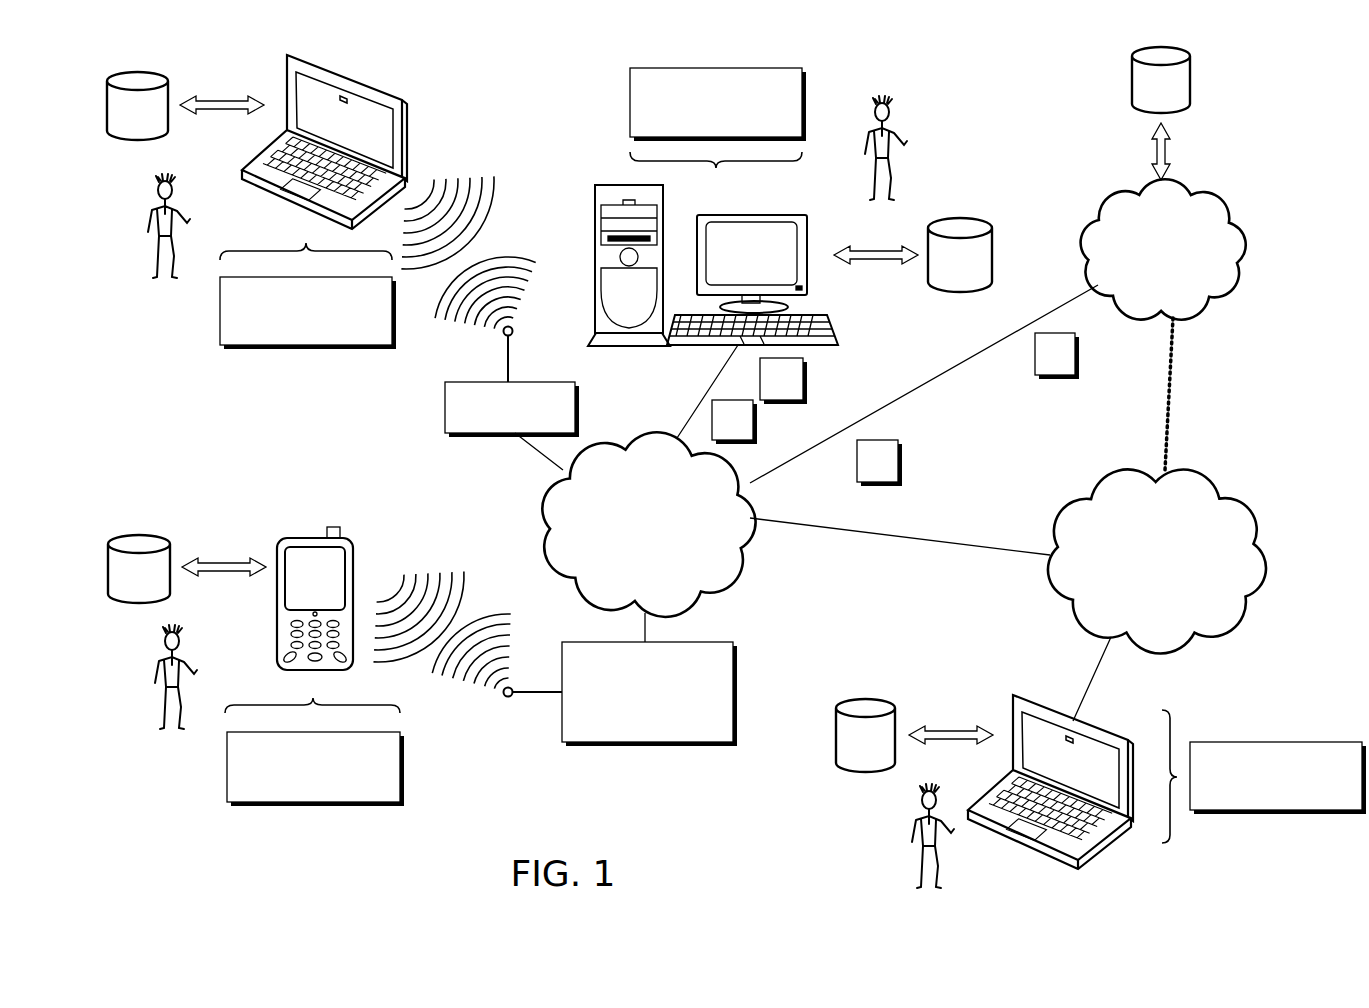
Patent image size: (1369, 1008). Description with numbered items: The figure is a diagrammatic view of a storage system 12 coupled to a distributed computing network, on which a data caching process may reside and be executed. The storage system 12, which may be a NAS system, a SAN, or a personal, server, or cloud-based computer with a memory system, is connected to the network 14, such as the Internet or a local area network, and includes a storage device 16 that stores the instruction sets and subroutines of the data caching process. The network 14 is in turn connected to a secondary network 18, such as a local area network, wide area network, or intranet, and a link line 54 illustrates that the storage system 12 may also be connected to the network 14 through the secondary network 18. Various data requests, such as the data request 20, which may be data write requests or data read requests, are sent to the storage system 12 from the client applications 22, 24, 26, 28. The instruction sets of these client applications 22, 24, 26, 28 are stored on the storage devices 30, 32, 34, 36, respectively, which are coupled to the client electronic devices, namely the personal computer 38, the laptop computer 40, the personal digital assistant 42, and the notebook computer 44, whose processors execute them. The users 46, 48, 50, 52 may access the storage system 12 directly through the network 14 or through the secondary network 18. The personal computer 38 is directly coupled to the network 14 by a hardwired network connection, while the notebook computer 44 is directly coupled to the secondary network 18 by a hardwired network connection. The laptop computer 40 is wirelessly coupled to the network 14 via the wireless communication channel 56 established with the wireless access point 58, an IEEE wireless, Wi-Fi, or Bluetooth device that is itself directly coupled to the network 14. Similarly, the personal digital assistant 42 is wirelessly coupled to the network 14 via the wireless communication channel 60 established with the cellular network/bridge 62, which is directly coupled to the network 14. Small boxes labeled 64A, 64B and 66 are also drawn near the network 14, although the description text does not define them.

The storage system 12 is at (1153, 293).
The network 14 is at (636, 552).
The storage device 16 is at (1149, 96).
The secondary network 18 is at (1150, 584).
The data request 20 is at (1048, 377).
The client application 22 is at (630, 105).
The client application 24 is at (220, 313).
The client application 26 is at (227, 768).
The client application 28 is at (1289, 742).
The storage device 30 is at (948, 266).
The storage device 32 is at (126, 117).
The storage device 34 is at (127, 581).
The storage device 36 is at (854, 749).
The personal computer 38 is at (745, 215).
The laptop computer 40 is at (375, 92).
The personal digital assistant 42 is at (305, 537).
The notebook computer 44 is at (1092, 730).
The user 46 is at (892, 112).
The user 48 is at (158, 183).
The user 50 is at (165, 636).
The user 52 is at (921, 795).
The link line 54 is at (1170, 400).
The wireless communication channel 56 is at (505, 229).
The wireless access point (WAP) 58 is at (445, 410).
The wireless communication channel 60 is at (478, 601).
The cellular network/bridge 62 is at (645, 744).
The client-side process 64A is at (755, 420).
The client-side process 64B is at (805, 381).
The client-side process 66 is at (900, 458).